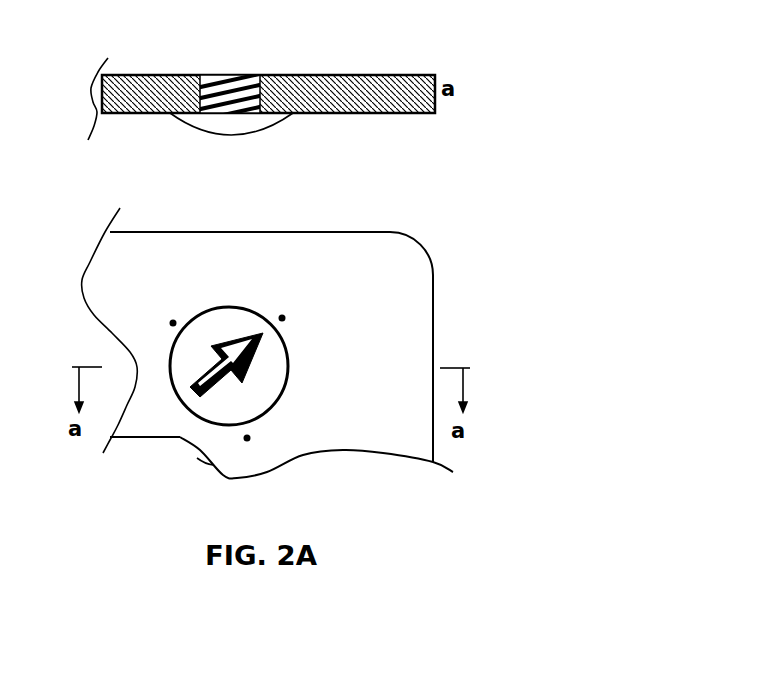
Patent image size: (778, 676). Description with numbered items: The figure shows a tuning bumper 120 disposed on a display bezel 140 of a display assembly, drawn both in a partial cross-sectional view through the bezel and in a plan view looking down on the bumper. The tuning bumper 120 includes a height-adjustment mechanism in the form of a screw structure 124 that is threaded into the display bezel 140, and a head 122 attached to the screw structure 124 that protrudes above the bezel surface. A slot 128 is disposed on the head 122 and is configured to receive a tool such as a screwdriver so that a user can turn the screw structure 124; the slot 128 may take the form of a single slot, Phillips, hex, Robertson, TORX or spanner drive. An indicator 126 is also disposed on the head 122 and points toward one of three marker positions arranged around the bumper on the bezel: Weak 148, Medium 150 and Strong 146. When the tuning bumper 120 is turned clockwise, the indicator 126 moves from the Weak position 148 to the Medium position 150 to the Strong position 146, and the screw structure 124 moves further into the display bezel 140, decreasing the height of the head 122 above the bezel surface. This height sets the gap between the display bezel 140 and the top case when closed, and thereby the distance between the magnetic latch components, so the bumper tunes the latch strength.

The tuning bumper 120 is at (198, 147).
The head 122 is at (255, 125).
The screw structure 124 is at (220, 83).
The indicator 126 is at (197, 397).
The slot 128 is at (213, 380).
The display bezel 140 is at (380, 83).
The marker position Strong 146 is at (282, 318).
The marker position Weak 148 is at (247, 438).
The marker position Medium 150 is at (167, 318).